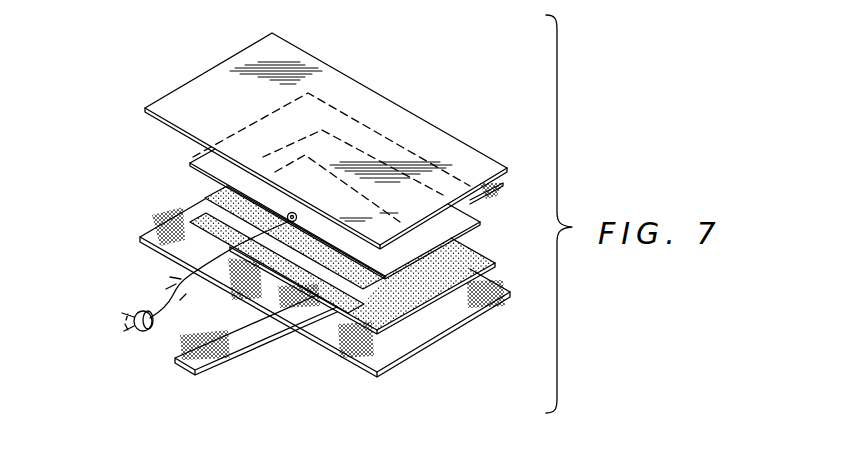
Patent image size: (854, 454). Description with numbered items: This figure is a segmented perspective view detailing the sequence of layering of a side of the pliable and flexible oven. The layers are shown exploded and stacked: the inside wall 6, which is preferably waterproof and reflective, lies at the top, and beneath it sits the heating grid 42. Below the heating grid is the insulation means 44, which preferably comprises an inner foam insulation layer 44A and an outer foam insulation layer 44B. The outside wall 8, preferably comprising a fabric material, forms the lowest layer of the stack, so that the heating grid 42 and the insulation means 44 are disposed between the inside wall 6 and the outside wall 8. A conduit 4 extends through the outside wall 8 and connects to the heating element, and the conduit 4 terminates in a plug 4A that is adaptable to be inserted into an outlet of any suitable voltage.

The inside wall 6 is at (396, 118).
The heating grid 42 is at (192, 164).
The outside wall 8 is at (140, 237).
The conduit 4 is at (165, 316).
The plug 4A is at (147, 314).
The insulation means 44 is at (472, 260).
The inner foam insulation layer 44A is at (377, 288).
The outer foam insulation layer 44B is at (391, 300).